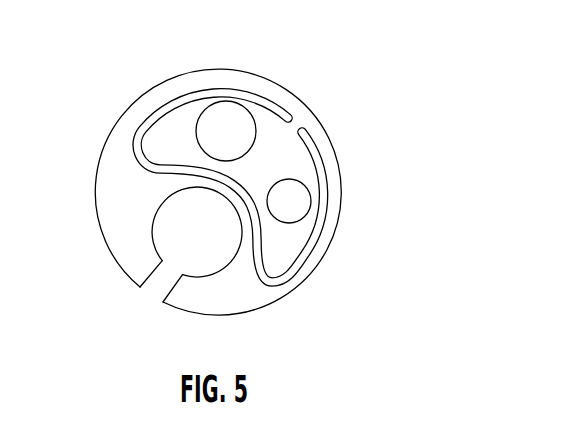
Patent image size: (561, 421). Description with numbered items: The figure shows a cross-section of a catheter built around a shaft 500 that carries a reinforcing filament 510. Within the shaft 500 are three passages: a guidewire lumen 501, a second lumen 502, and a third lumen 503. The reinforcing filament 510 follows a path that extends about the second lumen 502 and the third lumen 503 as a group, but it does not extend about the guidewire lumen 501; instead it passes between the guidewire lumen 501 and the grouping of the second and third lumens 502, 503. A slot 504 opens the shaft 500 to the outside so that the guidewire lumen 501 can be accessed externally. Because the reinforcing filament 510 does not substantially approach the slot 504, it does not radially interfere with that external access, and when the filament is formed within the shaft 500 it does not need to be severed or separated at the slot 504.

The shaft 500 is at (120, 128).
The guidewire lumen 501 is at (178, 222).
The second lumen 502 is at (231, 124).
The third lumen 503 is at (290, 199).
The slot 504 is at (160, 283).
The reinforcing filament 510 is at (195, 91).